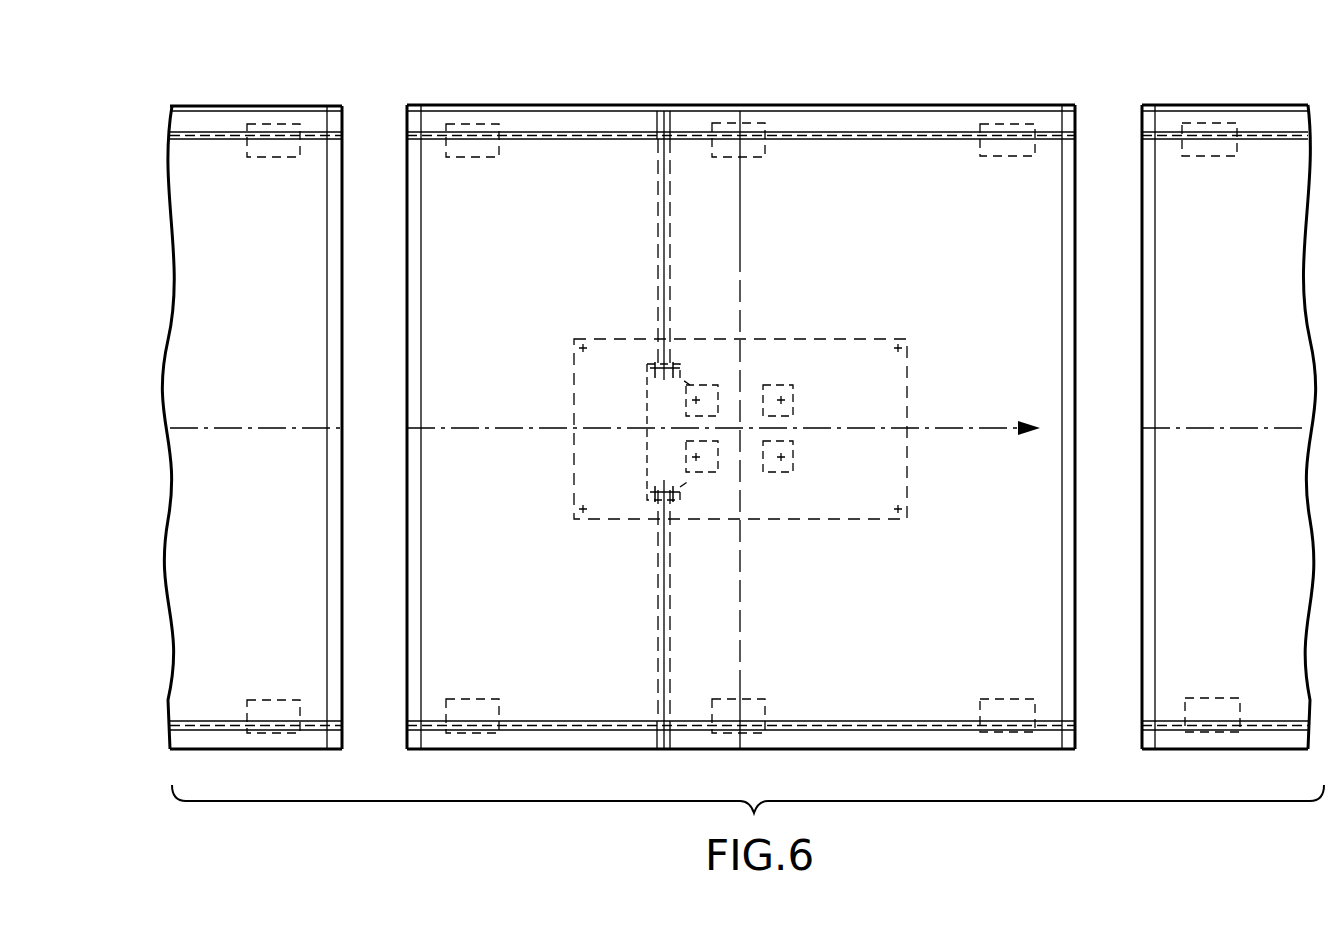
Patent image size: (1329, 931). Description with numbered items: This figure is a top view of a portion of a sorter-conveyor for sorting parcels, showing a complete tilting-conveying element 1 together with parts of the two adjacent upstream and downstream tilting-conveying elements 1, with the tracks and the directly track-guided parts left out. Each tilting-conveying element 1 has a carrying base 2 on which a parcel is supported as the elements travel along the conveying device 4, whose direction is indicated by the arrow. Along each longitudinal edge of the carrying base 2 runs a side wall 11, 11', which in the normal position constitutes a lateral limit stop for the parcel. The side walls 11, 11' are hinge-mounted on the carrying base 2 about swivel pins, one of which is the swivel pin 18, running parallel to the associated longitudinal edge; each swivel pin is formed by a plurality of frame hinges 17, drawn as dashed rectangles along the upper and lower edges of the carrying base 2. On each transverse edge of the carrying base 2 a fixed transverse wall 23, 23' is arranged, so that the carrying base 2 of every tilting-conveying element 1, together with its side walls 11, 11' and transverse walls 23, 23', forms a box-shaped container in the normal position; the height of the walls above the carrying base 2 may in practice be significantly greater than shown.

The tilting-conveying element 1 is at (300, 78).
The carrying base 2 is at (254, 566).
The conveying device 4 is at (985, 422).
The side wall 11 is at (739, 759).
The side wall 11' is at (739, 82).
The frame hinge 17 is at (295, 160).
The swivel pin 18 is at (1078, 135).
The transverse wall 23 is at (728, 427).
The transverse wall 23' is at (756, 449).